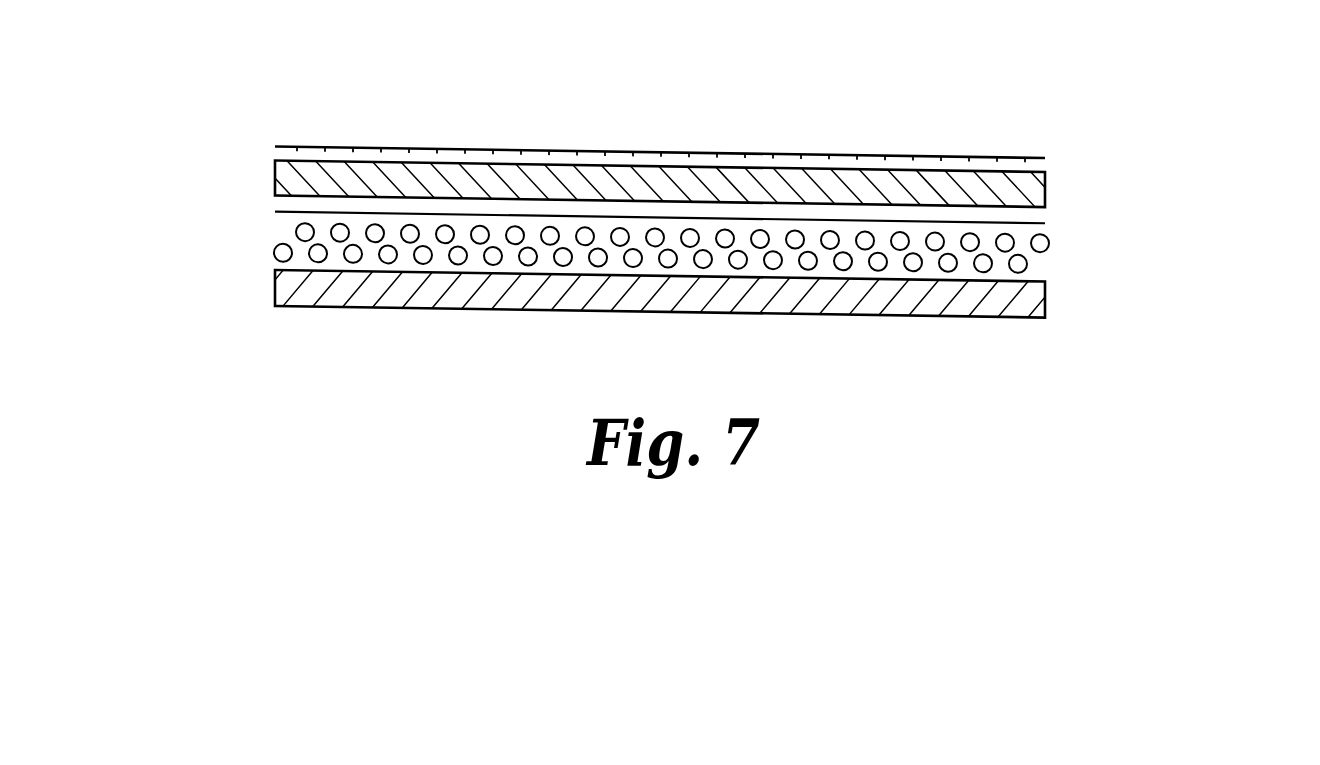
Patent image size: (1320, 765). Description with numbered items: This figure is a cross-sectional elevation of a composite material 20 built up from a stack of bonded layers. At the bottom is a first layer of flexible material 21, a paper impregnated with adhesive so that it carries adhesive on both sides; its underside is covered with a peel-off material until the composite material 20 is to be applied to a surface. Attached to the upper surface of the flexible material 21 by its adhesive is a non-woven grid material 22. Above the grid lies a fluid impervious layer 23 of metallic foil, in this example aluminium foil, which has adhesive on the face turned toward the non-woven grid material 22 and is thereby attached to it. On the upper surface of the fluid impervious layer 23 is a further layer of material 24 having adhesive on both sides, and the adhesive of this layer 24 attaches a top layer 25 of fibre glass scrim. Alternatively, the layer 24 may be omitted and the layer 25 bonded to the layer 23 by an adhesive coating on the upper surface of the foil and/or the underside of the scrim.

The composite material 20 is at (713, 207).
The first layer of flexible material 21 is at (655, 294).
The non-woven grid material 22 is at (661, 248).
The fluid impervious layer 23 is at (660, 218).
The further layer of material 24 is at (660, 183).
The layer of fibre glass scrim 25 is at (660, 155).